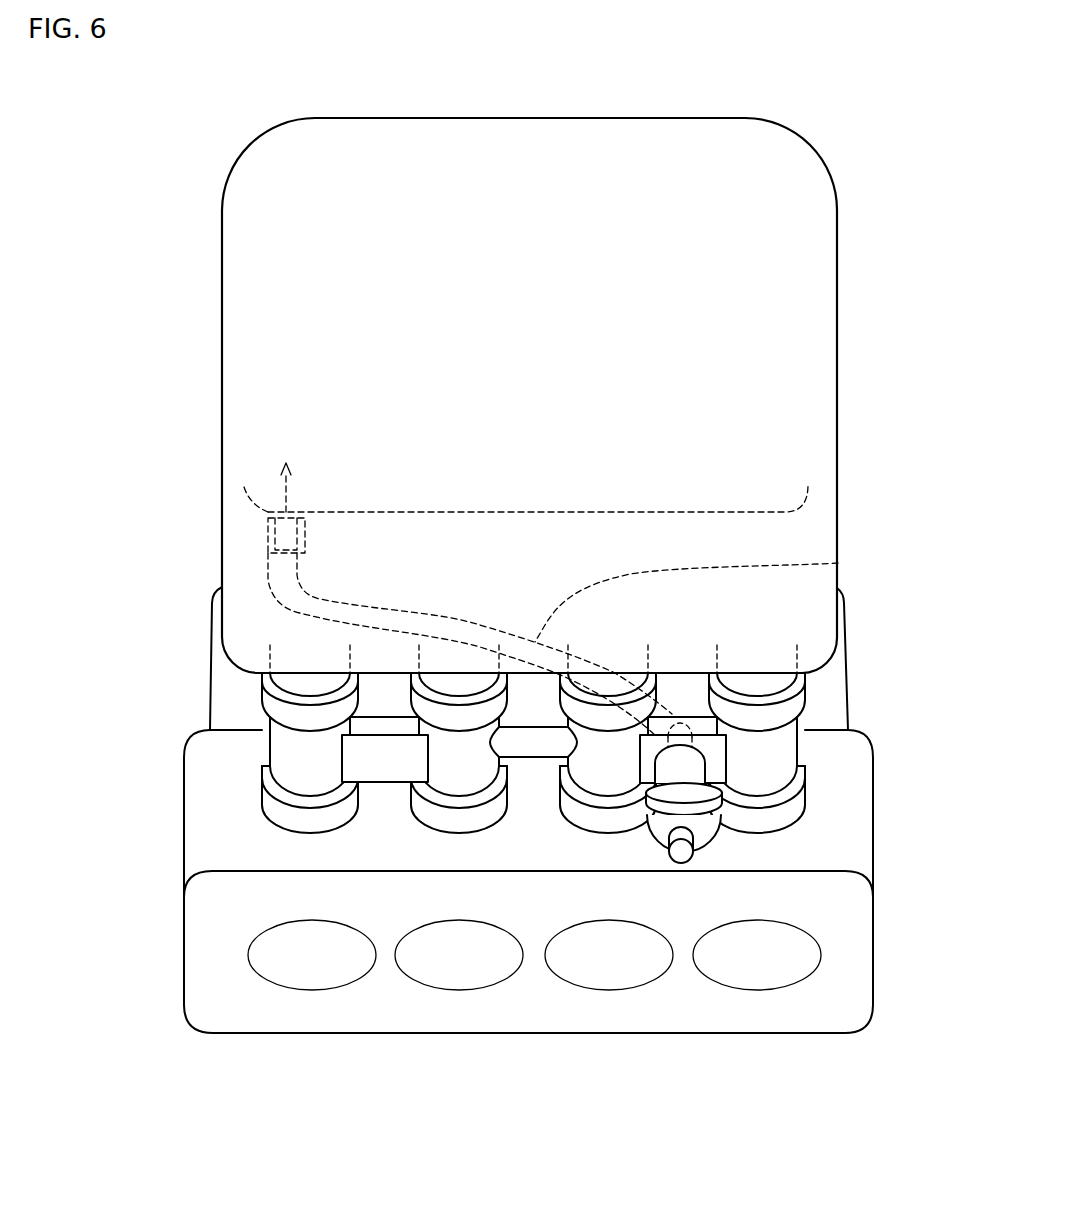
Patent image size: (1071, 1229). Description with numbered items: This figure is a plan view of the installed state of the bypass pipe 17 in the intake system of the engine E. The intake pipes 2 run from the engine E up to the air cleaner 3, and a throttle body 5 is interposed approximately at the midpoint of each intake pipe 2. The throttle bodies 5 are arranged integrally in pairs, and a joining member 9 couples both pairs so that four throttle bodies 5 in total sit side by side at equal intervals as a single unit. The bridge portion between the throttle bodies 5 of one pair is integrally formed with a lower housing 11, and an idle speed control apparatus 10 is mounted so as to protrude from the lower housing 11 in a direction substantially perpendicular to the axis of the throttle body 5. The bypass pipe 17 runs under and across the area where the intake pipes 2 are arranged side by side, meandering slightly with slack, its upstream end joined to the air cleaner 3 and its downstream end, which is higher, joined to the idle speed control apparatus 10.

The air cleaner 3 is at (845, 258).
The bypass pipe 17 is at (838, 563).
The intake pipe 2 is at (768, 677).
The throttle body 5 is at (293, 755).
The lower housing 11 is at (381, 782).
The joining member 9 is at (537, 757).
The idle speed control apparatus 10 is at (697, 841).
The engine E is at (853, 853).